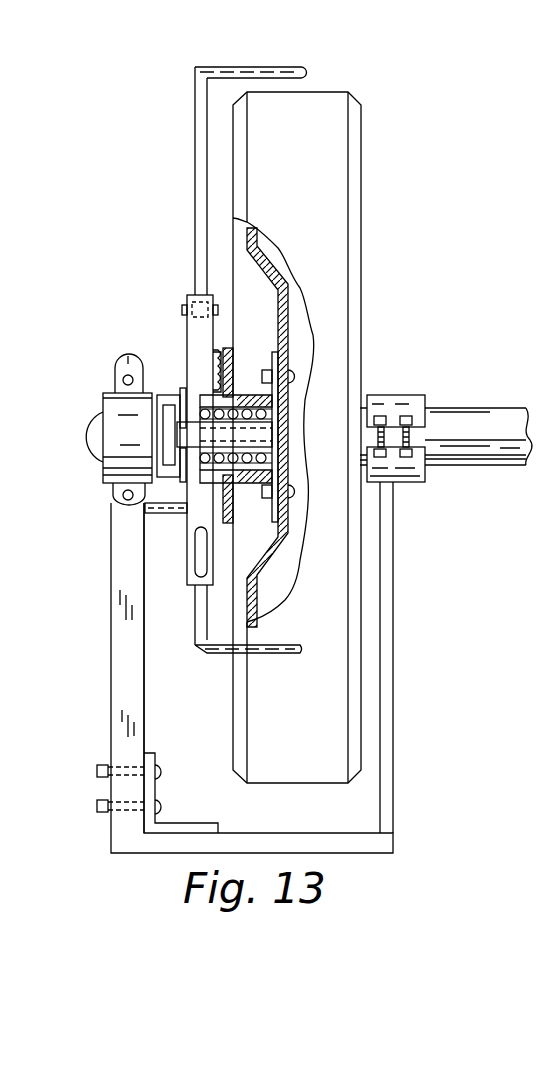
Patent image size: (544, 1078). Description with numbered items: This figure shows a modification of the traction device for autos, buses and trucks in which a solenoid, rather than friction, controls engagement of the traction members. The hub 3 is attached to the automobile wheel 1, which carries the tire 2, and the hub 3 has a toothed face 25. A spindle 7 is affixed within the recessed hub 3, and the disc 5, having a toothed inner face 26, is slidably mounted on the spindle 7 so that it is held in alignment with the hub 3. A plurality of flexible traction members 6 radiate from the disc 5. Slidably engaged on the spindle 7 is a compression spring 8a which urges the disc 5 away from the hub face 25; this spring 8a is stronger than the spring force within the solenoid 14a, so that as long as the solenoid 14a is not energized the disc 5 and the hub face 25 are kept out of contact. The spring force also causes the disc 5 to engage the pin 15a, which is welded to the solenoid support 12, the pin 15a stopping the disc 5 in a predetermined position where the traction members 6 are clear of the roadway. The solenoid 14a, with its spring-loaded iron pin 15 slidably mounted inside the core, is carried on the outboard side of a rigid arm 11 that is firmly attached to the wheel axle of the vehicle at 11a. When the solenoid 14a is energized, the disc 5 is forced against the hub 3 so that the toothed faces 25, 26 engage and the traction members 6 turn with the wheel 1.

The automobile wheel 1 is at (288, 323).
The tire 2 is at (362, 150).
The hub 3 is at (243, 394).
The disc 5 is at (187, 337).
The flexible traction members 6 is at (233, 66).
The spindle 7 is at (258, 433).
The compression spring 8a is at (254, 467).
The rigid arm 11 is at (393, 560).
The attachment to wheel axle 11a is at (425, 482).
The solenoid support 12 is at (110, 657).
The solenoid 14a is at (103, 410).
The spring-loaded iron pin 15 is at (160, 394).
The pin 15a is at (157, 515).
The toothed face 25 is at (220, 372).
The toothed inner face 26 is at (219, 348).